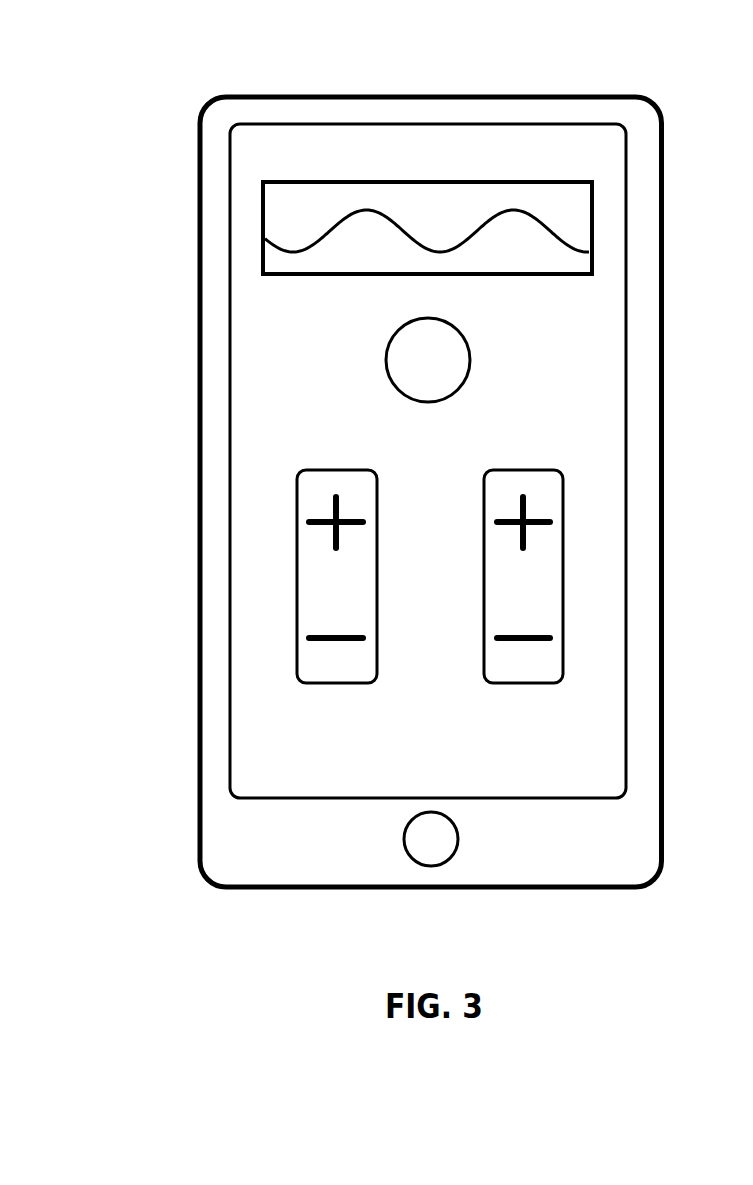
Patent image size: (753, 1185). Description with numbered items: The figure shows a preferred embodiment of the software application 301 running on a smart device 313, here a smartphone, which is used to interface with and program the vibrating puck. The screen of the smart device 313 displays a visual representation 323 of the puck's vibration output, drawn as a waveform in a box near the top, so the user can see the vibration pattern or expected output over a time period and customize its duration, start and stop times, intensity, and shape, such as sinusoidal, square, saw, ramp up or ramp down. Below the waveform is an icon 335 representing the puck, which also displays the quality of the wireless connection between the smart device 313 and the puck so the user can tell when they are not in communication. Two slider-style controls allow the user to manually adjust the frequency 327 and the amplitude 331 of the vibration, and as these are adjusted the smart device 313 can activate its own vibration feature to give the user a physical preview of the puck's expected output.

The software application 301 is at (164, 93).
The smart device 313 is at (328, 864).
The visual representation 323 is at (364, 301).
The icon 335 is at (448, 371).
The frequency 327 is at (356, 594).
The amplitude 331 is at (543, 594).